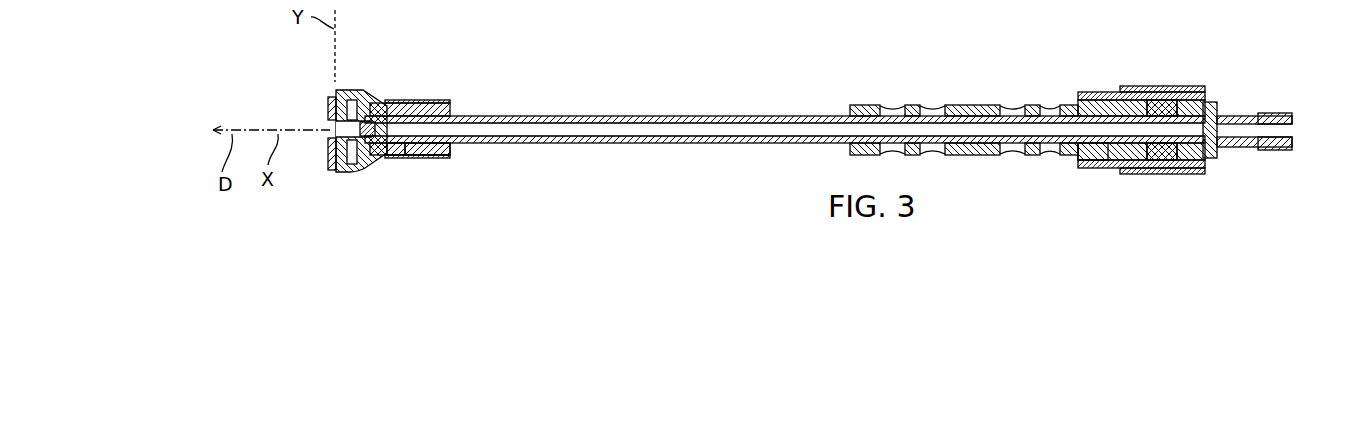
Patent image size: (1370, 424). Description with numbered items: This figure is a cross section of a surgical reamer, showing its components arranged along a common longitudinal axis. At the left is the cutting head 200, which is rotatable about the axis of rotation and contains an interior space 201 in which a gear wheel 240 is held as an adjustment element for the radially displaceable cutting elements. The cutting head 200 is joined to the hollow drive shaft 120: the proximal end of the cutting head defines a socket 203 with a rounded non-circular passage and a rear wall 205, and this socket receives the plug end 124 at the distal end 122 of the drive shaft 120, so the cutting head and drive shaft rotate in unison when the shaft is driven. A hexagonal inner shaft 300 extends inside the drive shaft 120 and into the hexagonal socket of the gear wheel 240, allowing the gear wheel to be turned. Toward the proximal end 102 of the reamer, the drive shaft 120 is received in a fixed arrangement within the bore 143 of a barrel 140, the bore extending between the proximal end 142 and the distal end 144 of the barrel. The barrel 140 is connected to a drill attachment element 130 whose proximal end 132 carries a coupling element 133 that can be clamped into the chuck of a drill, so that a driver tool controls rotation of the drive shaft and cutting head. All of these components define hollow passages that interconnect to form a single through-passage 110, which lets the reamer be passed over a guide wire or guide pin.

The proximal end 102 is at (1198, 87).
The through-passage 110 is at (716, 135).
The drive shaft 120 is at (640, 144).
The distal end of drive shaft 122 is at (452, 156).
The plug end 124 is at (452, 104).
The drill attachment element 130 is at (1243, 148).
The proximal end of drill attachment element 132 is at (1278, 149).
The coupling element 133 is at (1278, 114).
The barrel 140 is at (1092, 92).
The proximal end of barrel 142 is at (1155, 100).
The bore 143 is at (1100, 162).
The distal end of barrel 144 is at (1078, 162).
The cutting head 200 is at (410, 102).
The interior space 201 is at (372, 100).
The socket 203 is at (435, 157).
The rear wall 205 is at (403, 157).
The gear wheel 240 is at (364, 170).
The inner shaft 300 is at (770, 120).